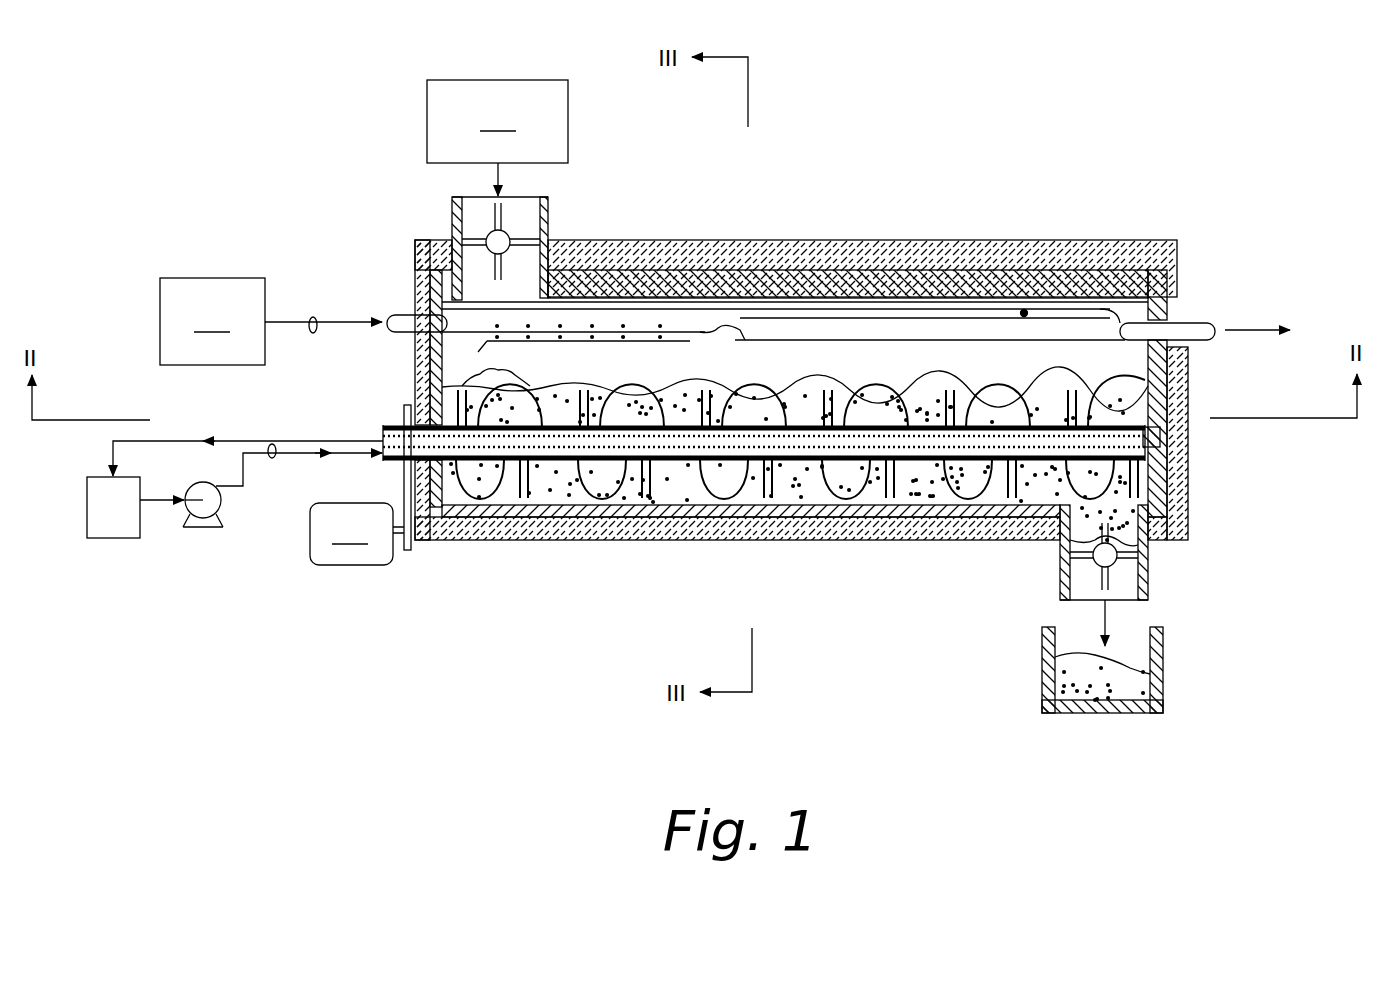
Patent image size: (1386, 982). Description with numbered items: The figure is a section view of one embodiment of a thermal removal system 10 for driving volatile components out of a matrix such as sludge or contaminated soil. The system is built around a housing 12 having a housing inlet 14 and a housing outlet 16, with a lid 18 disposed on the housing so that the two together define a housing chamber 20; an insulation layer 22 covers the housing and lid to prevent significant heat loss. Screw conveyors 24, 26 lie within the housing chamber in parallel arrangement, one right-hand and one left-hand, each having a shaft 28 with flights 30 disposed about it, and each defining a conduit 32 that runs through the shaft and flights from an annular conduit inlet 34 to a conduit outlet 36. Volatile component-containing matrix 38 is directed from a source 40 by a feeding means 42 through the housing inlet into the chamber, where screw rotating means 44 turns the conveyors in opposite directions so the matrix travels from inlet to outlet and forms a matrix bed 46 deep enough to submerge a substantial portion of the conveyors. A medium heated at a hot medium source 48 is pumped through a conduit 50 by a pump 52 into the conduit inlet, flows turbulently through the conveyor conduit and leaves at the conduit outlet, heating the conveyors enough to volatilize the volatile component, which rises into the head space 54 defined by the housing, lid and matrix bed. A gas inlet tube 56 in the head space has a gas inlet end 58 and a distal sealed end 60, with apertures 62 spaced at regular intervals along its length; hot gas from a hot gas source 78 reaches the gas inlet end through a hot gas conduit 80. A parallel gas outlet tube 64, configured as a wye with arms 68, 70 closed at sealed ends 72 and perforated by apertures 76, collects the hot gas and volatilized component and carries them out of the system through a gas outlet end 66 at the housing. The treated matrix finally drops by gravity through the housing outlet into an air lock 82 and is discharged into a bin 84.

The thermal removal system 10 is at (228, 147).
The housing 12 is at (839, 401).
The housing inlet 14 is at (445, 243).
The housing outlet 16 is at (1150, 545).
The lid 18 is at (818, 278).
The housing chamber 20 is at (1150, 484).
The insulation layer 22 is at (839, 390).
The screw conveyor 24 is at (744, 483).
The screw conveyor 26 is at (910, 470).
The shaft 28 is at (995, 470).
The flights 30 is at (820, 482).
The conduit 32 is at (851, 425).
The conduit inlet 34 is at (393, 426).
The conduit outlet 36 is at (386, 437).
The volatile component-containing matrix 38 is at (518, 374).
The source 40 is at (497, 138).
The feeding means 42 is at (511, 237).
The screw rotating means 44 is at (357, 534).
The matrix bed 46 is at (940, 388).
The hot medium source 48 is at (110, 539).
The conduit 50 is at (272, 458).
The pump 52 is at (226, 516).
The head space 54 is at (1034, 374).
The gas inlet tube 56 is at (776, 280).
The gas inlet end 58 is at (386, 316).
The sealed end 60 is at (1112, 317).
The apertures 62 is at (597, 330).
The gas outlet tube 64 is at (1024, 310).
The gas outlet end 66 is at (1190, 322).
The arm 68 is at (768, 341).
The arm 70 is at (705, 337).
The sealed ends 72 is at (568, 358).
The apertures 76 is at (625, 338).
The hot gas source 78 is at (271, 321).
The hot gas conduit 80 is at (312, 318).
The air lock 82 is at (1148, 572).
The bin 84 is at (1165, 676).